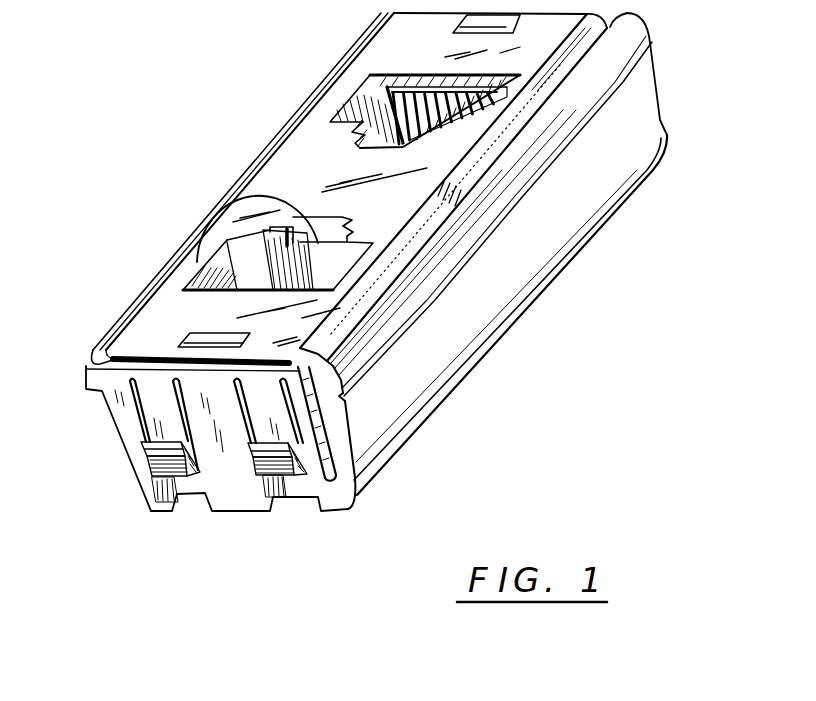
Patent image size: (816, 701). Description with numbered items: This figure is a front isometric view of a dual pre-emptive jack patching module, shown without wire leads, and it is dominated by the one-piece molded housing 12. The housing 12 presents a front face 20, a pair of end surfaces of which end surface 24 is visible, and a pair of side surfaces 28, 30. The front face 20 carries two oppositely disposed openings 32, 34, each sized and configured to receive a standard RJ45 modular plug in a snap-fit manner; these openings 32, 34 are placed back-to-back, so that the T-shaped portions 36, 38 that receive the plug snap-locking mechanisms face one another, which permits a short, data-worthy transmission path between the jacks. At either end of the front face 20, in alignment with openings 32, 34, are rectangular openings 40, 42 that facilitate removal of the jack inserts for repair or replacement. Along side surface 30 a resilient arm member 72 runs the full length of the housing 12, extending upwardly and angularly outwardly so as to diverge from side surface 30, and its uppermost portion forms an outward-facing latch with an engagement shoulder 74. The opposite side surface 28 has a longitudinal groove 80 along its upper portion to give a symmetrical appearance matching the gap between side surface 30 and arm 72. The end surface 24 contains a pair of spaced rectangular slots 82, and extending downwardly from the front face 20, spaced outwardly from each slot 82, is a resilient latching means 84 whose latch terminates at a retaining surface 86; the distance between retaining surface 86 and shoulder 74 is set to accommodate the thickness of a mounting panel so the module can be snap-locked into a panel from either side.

The housing 12 is at (280, 122).
The front face 20 is at (560, 50).
The end surface 24 is at (225, 503).
The side surface 28 is at (120, 438).
The side surface 30 is at (335, 470).
The opening 32 is at (215, 262).
The opening 34 is at (363, 100).
The T-shaped portion 36 is at (232, 197).
The T-shaped portion 38 is at (360, 143).
The rectangular opening 40 is at (207, 337).
The rectangular opening 42 is at (467, 29).
The resilient arm member 72 is at (557, 250).
The engagement shoulder 74 is at (345, 395).
The longitudinal groove 80 is at (92, 351).
The rectangular slot 82 is at (193, 490).
The resilient latching means 84 is at (155, 403).
The retaining surface 86 is at (150, 459).